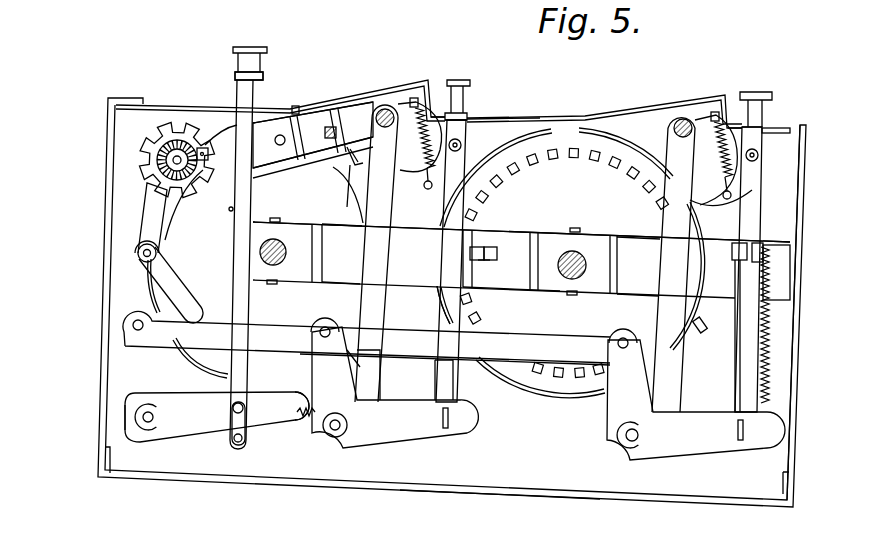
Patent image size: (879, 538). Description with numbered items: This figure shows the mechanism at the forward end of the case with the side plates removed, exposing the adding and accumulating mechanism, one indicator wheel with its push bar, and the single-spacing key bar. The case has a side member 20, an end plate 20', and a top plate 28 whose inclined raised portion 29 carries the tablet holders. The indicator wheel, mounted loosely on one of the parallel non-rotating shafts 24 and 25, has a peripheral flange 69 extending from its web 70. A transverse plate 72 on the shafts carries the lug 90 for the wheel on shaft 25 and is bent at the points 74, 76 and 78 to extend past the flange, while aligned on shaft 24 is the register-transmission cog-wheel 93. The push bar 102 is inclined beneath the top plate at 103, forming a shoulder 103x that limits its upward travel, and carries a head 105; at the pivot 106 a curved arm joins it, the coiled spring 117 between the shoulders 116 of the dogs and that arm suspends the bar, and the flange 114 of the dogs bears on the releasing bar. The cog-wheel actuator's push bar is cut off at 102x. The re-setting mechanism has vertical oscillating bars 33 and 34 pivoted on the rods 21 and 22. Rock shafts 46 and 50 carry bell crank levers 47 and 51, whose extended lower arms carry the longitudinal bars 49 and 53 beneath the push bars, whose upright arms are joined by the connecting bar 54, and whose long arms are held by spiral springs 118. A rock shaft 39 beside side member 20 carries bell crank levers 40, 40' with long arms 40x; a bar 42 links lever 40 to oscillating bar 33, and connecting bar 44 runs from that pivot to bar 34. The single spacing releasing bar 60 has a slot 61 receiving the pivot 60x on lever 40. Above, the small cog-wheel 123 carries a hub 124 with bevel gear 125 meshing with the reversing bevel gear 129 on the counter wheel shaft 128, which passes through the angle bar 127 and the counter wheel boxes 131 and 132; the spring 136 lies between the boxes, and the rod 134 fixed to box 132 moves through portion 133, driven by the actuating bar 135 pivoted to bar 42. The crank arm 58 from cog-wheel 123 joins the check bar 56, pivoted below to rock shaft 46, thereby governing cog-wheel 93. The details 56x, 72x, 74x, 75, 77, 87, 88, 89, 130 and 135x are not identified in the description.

The side member 20 is at (441, 302).
The end plate 20' is at (812, 312).
The rod 21 is at (683, 115).
The rod 22 is at (395, 117).
The non-rotating shaft 24 is at (287, 265).
The non-rotating shaft 25 is at (582, 279).
The top plate 28 is at (502, 118).
The inclined raised portion 29 is at (635, 113).
The oscillating bar 33 is at (378, 258).
The oscillating bar 34 is at (674, 283).
The rock shaft 39 is at (147, 426).
The bell crank lever 40 is at (217, 451).
The bell crank lever 40' is at (99, 405).
The long arm 40x is at (293, 450).
The connecting bar 42 is at (150, 305).
The connecting bar 44 is at (470, 362).
The rock shaft 46 is at (335, 432).
The bell crank lever 47 is at (352, 442).
The longitudinal bar 49 is at (445, 430).
The rock shaft 50 is at (633, 438).
The bell crank lever 51 is at (625, 456).
The longitudinal bar 53 is at (742, 440).
The connecting bar 54 is at (431, 305).
The check bar 56 is at (163, 270).
The pivot 56x is at (140, 253).
The crank arm 58 is at (150, 220).
The single spacing releasing bar 60 is at (264, 78).
The pivot 60x is at (276, 456).
The slot 61 is at (233, 447).
The peripheral flange 69 is at (553, 125).
The web 70 is at (598, 163).
The transverse plate 72 is at (632, 242).
The rail lower edge 72x is at (511, 303).
The bent point 74 is at (638, 266).
The compartment partition 74x is at (552, 247).
The block 75 is at (490, 245).
The bent point 76 is at (521, 258).
The compartment 77 is at (342, 254).
The bent point 78 is at (290, 226).
The block 87 is at (773, 264).
The block 88 is at (730, 317).
The pin 89 is at (490, 262).
The lug 90 is at (497, 250).
The register-transmission cog-wheel 93 is at (342, 195).
The push bar 102 is at (467, 160).
The cut-off upper end 102x is at (471, 133).
The inclined portion 103 is at (792, 132).
The shoulder 103x is at (467, 116).
The head 105 is at (264, 52).
The pivot 106 is at (758, 156).
The flange 114 is at (702, 330).
The shoulder 116 is at (565, 149).
The coiled spring 117 is at (589, 190).
The spiral spring 118 is at (767, 383).
The small cog-wheel 123 is at (164, 105).
The hub 124 is at (199, 143).
The bevel gear wheel 125 is at (173, 143).
The angle bar 127 is at (299, 108).
The counter wheel shaft 128 is at (190, 205).
The reversing bevel gear wheel 129 is at (152, 155).
The bracket 130 is at (340, 158).
The counter wheel box 131 is at (328, 101).
The counter wheel box 132 is at (352, 112).
The rear end portion 133 is at (343, 194).
The rod 134 is at (295, 166).
The actuating bar 135 is at (230, 210).
The sector edge 135x is at (248, 373).
The spiral spring 136 is at (346, 129).